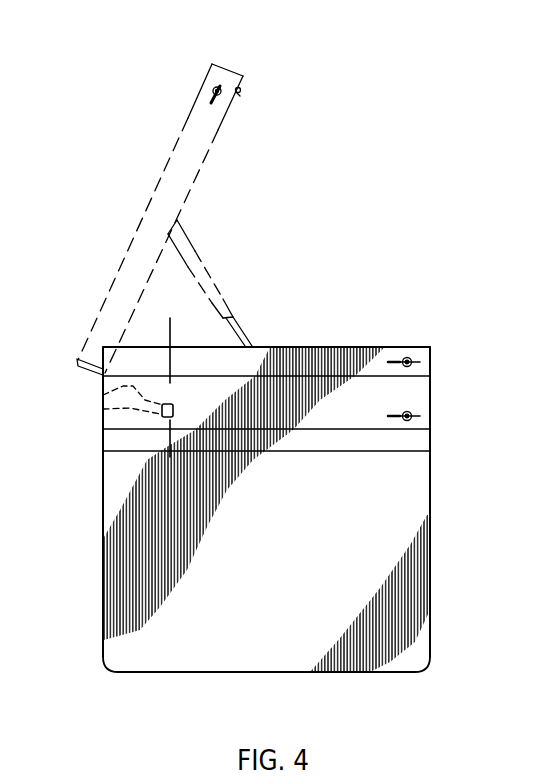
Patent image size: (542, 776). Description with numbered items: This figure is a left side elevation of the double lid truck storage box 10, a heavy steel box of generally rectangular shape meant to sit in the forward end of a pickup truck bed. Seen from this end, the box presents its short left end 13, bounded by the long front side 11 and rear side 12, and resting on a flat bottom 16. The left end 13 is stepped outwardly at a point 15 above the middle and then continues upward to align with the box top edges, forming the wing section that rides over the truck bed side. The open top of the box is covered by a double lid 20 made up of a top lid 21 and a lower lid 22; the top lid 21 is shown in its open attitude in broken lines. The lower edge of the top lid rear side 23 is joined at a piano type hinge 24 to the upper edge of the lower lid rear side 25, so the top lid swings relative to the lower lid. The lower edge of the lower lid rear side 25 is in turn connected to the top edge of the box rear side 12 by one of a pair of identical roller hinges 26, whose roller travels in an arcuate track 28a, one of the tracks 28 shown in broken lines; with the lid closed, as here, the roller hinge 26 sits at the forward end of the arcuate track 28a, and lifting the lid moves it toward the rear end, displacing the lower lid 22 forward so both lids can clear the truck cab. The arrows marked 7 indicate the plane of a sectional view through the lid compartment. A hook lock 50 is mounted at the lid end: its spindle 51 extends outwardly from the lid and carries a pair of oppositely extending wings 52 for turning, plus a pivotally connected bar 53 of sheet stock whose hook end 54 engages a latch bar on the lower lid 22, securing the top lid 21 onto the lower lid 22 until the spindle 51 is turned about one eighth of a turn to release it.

The double lid truck storage box 10 is at (125, 693).
The front side 11 is at (432, 557).
The rear side 12 is at (103, 550).
The left end 13 is at (268, 571).
The step point 15 is at (410, 452).
The flat bottom 16 is at (263, 673).
The double lid 20 is at (283, 314).
The top lid 21 is at (188, 170).
The lower lid 22 is at (335, 422).
The top lid rear side 23 is at (80, 360).
The hinge 24 is at (96, 373).
The lower lid rear side 25 is at (103, 418).
The roller hinge 26 is at (100, 413).
The arcuate track 28a is at (100, 398).
The nozzle 28 is at (536, 391).
The hook lock 50 is at (211, 54).
The spindle 51 is at (214, 92).
The wings 52 is at (219, 88).
The bar 53 is at (241, 90).
The hook end 54 is at (239, 95).
The section line 7- 7 is at (135, 330).